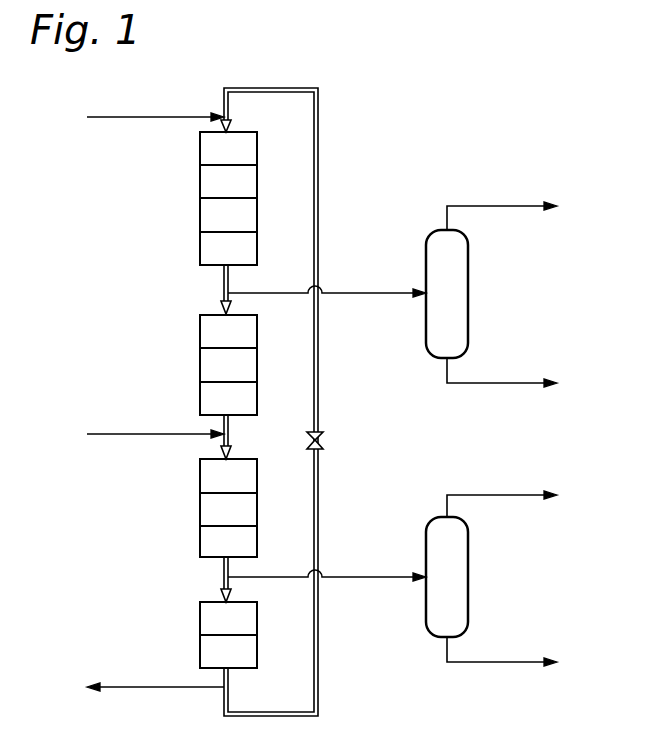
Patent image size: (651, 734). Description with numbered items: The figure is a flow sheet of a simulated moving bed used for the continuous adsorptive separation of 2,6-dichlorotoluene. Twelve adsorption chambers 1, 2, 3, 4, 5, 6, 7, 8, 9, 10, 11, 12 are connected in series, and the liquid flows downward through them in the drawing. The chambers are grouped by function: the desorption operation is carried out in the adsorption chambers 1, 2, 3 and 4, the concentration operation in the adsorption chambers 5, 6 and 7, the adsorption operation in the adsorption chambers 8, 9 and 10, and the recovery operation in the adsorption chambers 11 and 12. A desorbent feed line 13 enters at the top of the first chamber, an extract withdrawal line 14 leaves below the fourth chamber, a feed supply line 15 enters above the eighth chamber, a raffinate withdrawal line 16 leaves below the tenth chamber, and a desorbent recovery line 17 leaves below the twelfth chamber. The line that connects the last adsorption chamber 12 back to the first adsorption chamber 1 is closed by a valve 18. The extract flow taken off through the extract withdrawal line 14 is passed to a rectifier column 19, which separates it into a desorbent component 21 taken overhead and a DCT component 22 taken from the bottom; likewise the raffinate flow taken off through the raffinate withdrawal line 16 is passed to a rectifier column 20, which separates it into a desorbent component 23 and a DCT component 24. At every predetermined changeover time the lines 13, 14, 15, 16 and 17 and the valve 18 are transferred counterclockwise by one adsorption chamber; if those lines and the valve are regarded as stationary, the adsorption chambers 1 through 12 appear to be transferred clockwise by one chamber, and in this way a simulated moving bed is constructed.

The adsorption chamber 1 is at (228, 148).
The adsorption chamber 2 is at (228, 181).
The adsorption chamber 3 is at (228, 215).
The adsorption chamber 4 is at (228, 248).
The adsorption chamber 5 is at (228, 331).
The adsorption chamber 6 is at (228, 365).
The adsorption chamber 7 is at (228, 398).
The adsorption chamber 8 is at (228, 476).
The adsorption chamber 9 is at (228, 509).
The adsorption chamber 10 is at (228, 541).
The adsorption chamber 11 is at (228, 618).
The adsorption chamber 12 is at (228, 651).
The desorbent feed line 13 is at (155, 102).
The extract withdrawal line 14 is at (327, 277).
The feed supply line 15 is at (155, 419).
The raffinate withdrawal line 16 is at (327, 562).
The desorbent recovery line 17 is at (155, 672).
The valve 18 is at (336, 442).
The rectifier column 19 is at (447, 294).
The rectifier column 20 is at (447, 577).
The desorbent component 21 is at (522, 209).
The DCT component 22 is at (522, 377).
The desorbent component 23 is at (522, 497).
The DCT component 24 is at (522, 658).